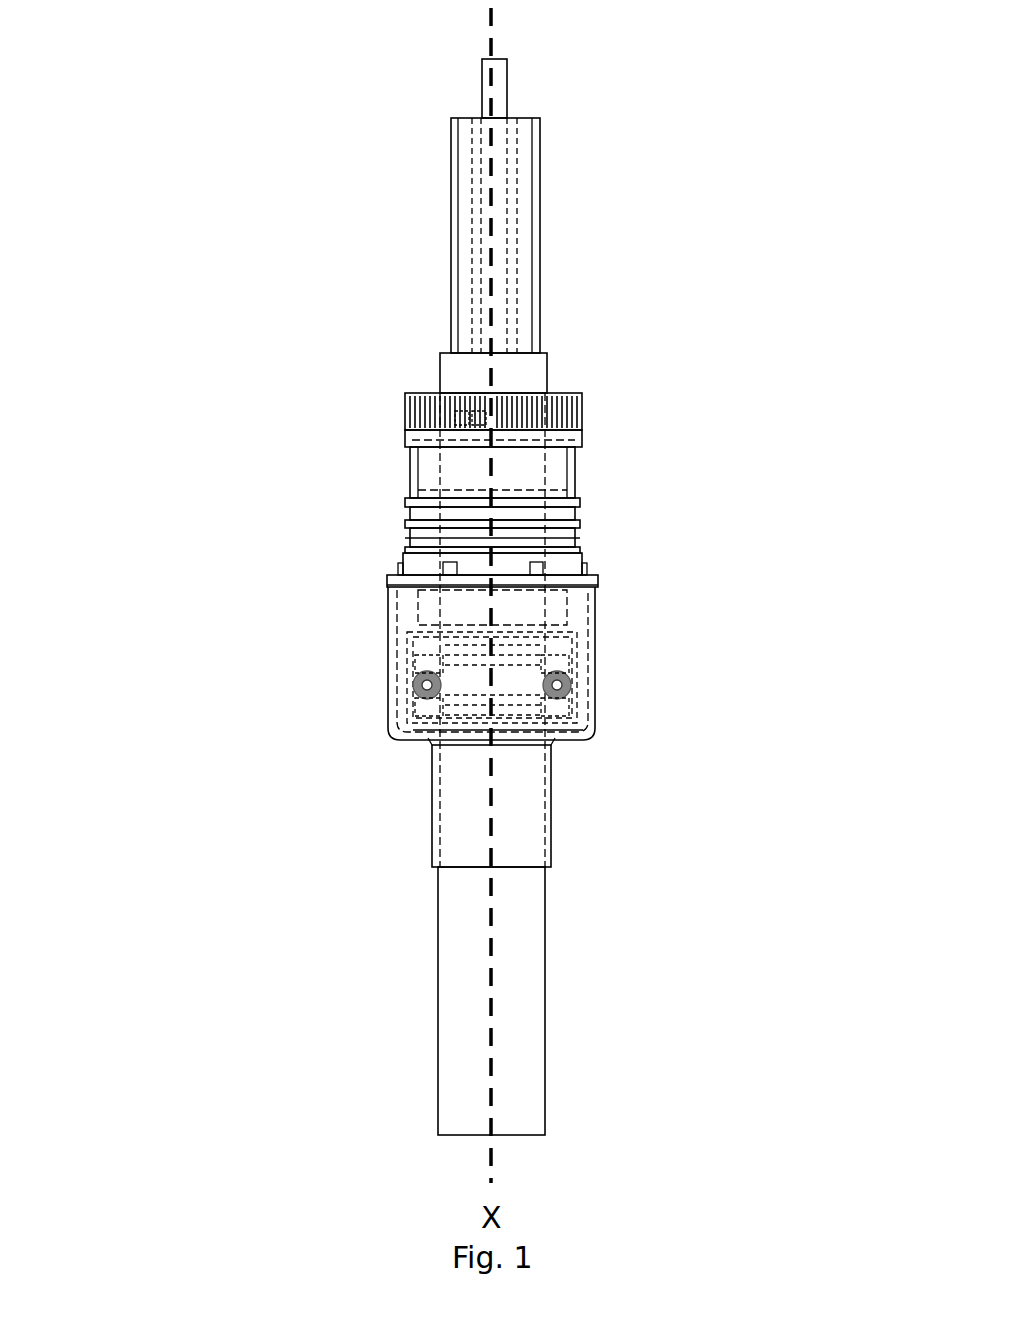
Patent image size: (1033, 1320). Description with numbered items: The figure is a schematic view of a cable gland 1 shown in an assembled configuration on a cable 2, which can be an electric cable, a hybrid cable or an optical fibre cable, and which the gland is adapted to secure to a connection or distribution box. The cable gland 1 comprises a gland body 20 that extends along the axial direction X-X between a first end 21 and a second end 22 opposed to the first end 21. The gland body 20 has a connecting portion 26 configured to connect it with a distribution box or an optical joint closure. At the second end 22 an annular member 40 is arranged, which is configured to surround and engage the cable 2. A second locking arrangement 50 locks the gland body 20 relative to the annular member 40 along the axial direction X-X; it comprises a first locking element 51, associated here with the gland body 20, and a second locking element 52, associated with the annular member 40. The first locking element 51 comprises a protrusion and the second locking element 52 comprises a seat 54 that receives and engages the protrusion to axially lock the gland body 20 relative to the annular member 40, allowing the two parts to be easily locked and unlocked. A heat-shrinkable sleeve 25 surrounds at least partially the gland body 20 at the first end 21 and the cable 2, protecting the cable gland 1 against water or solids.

The cable gland 1 is at (210, 158).
The cable 2 is at (505, 935).
The gland body 20 is at (372, 609).
The first end 21 is at (555, 748).
The second end 22 is at (583, 433).
The heat-shrinkable sleeve 25 is at (385, 703).
The connecting portion 26 is at (597, 517).
The annular member 40 is at (427, 382).
The second locking arrangement 50 is at (480, 405).
The first locking element 51 is at (505, 418).
The second locking element 52 is at (443, 420).
The seat 54 is at (460, 412).